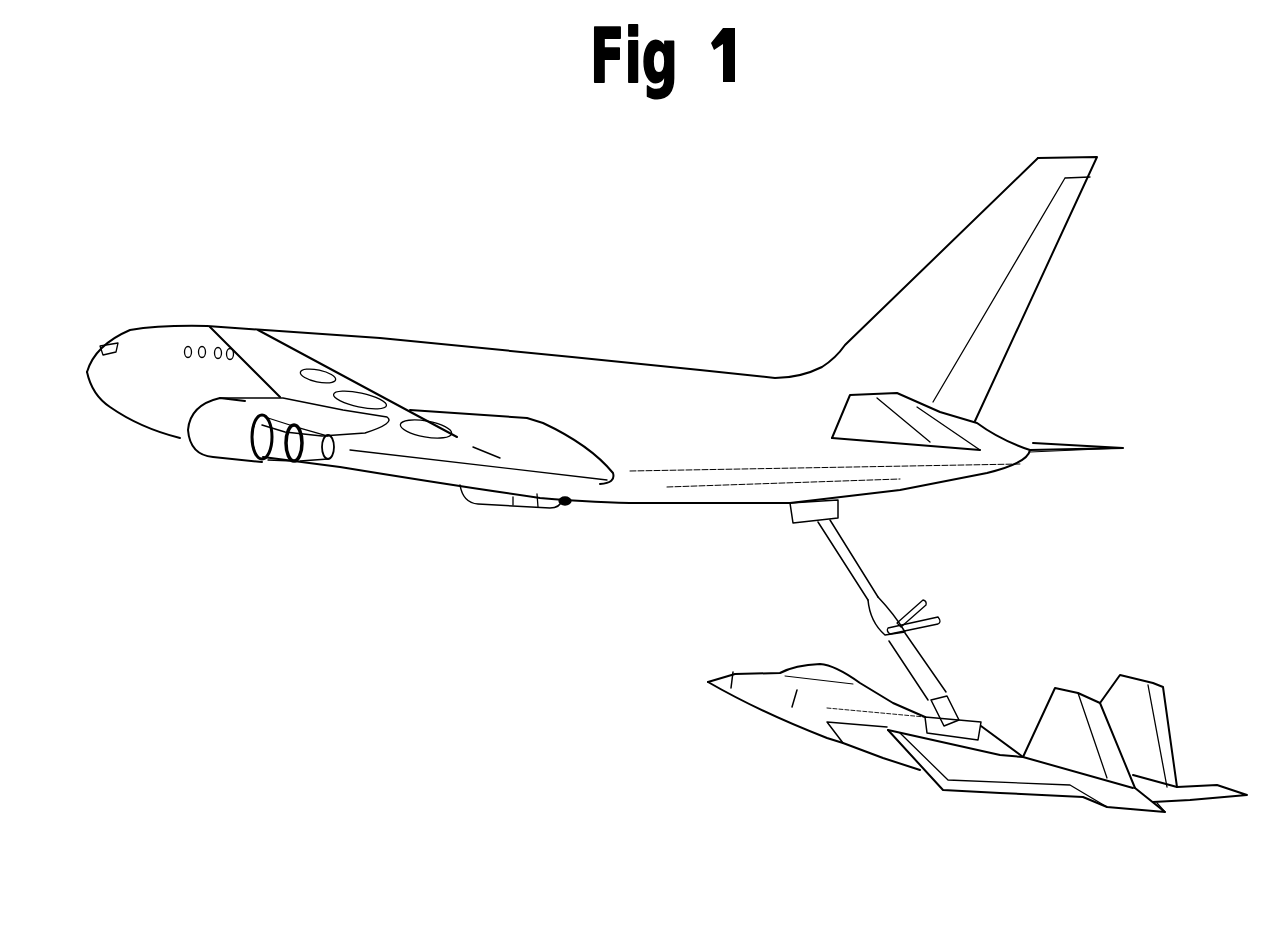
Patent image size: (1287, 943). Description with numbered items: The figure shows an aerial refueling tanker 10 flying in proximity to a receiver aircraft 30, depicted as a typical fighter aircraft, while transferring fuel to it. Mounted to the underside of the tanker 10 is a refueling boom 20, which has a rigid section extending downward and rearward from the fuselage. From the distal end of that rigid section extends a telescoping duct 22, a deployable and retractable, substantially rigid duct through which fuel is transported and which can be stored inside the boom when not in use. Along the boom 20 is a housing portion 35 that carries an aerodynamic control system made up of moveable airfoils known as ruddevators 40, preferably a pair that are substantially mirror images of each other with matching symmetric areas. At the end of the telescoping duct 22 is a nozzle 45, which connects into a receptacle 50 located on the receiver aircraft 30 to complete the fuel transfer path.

The aerial refueling tanker 10 is at (572, 356).
The refueling boom 20 is at (808, 539).
The telescoping duct 22 is at (892, 663).
The receiver aircraft 30 is at (884, 757).
The housing portion 35 is at (873, 600).
The ruddevators 40 is at (948, 604).
The nozzle 45 is at (963, 700).
The receptacle 50 is at (997, 750).